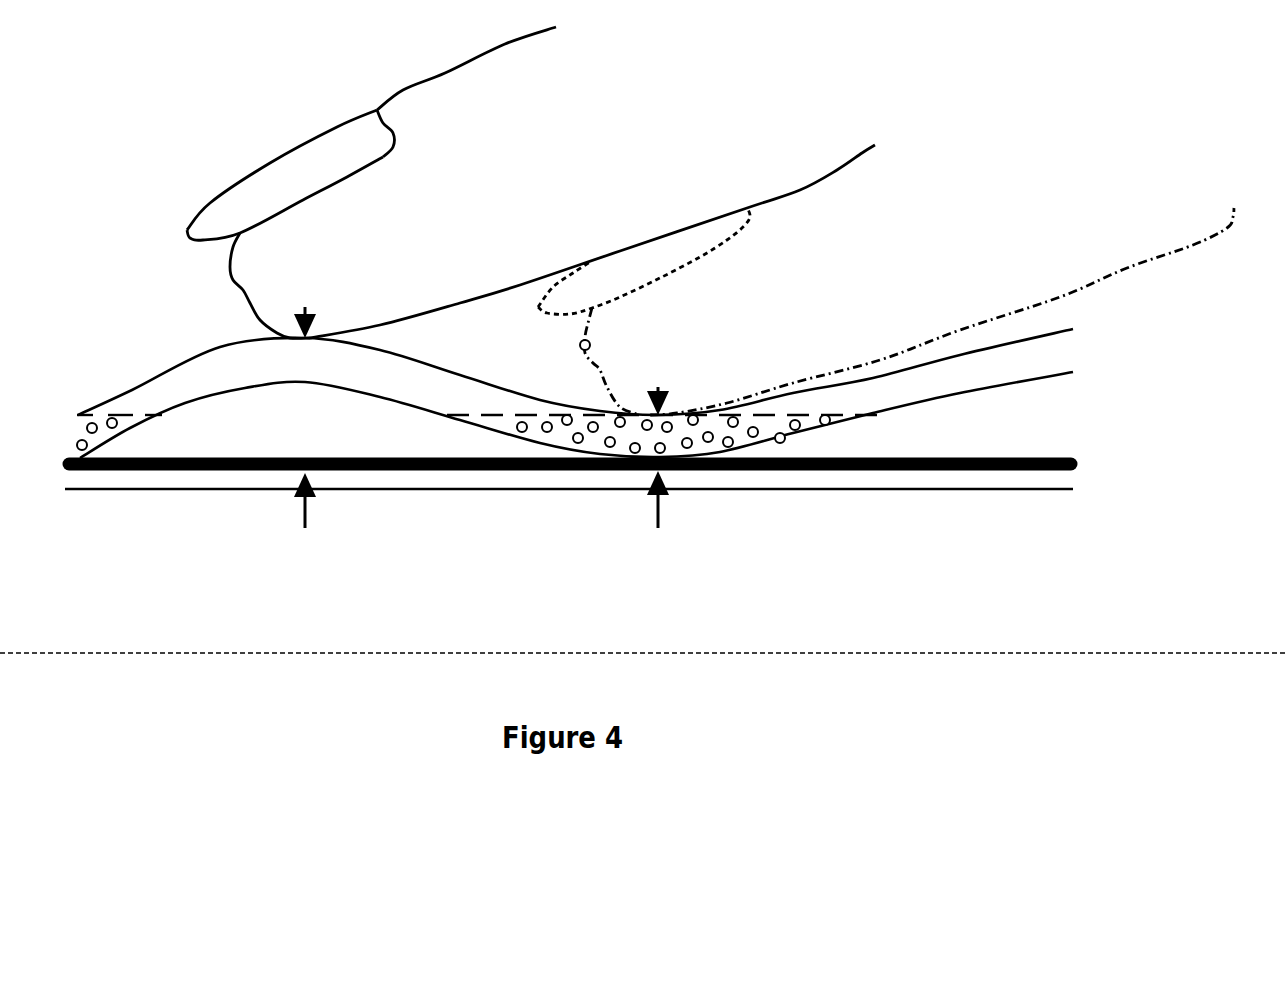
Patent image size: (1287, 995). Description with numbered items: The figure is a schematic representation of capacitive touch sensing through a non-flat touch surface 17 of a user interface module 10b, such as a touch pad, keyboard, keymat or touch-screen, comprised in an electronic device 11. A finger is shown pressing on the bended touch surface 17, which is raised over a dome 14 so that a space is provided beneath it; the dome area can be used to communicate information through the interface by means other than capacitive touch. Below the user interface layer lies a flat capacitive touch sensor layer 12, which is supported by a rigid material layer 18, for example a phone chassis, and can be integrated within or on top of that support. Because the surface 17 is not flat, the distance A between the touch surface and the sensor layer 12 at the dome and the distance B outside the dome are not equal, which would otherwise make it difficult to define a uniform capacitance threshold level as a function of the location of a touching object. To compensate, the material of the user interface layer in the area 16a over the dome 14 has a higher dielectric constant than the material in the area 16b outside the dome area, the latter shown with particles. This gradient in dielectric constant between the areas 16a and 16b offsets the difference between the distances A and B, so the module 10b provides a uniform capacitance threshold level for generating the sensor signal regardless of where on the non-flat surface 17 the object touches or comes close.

The user interface module 10b is at (656, 138).
The electronic device 11 is at (952, 653).
The capacitive touch sensor layer 12 is at (893, 470).
The dome 14 is at (238, 428).
The area of the user interface layer over the dome 16a is at (237, 360).
The area outside of the dome area 16b is at (712, 442).
The non-flat touch surface 17 is at (155, 372).
The rigid material layer 18 is at (462, 492).
The distance A is at (300, 434).
The distance B is at (666, 469).